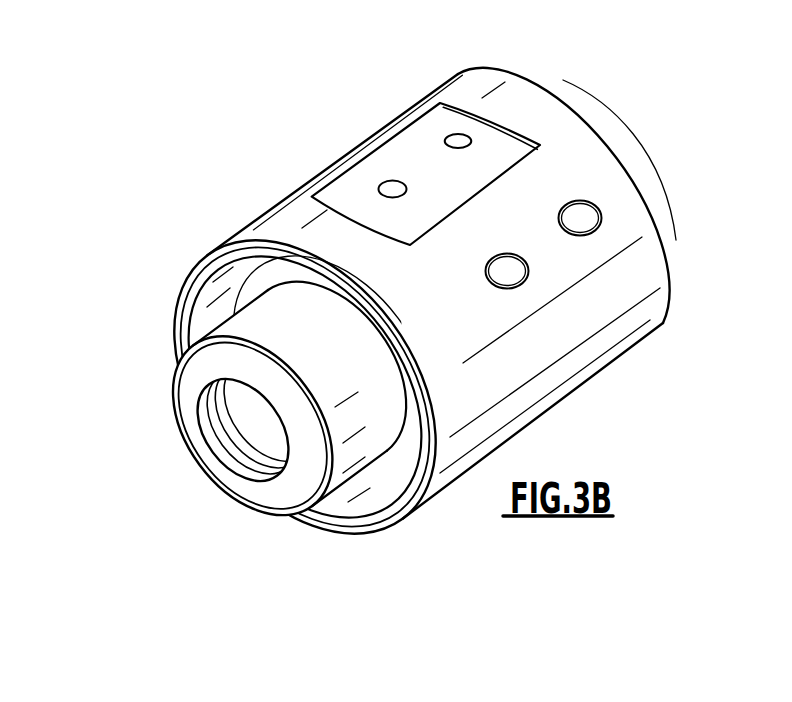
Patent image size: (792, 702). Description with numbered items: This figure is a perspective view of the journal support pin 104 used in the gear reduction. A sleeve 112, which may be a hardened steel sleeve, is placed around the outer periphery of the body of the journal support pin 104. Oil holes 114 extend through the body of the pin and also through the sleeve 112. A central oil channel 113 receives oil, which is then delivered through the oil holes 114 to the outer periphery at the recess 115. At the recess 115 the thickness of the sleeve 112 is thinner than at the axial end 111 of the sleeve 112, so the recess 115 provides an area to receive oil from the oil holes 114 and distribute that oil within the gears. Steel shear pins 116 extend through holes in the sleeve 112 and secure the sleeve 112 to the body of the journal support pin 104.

The journal support pin 104 is at (200, 184).
The axial end of the sleeve 111 is at (288, 212).
The sleeve 112 is at (657, 270).
The central oil channel 113 is at (480, 78).
The oil holes 114 is at (458, 145).
The recess 115 is at (418, 147).
The steel shear pins 116 is at (584, 217).